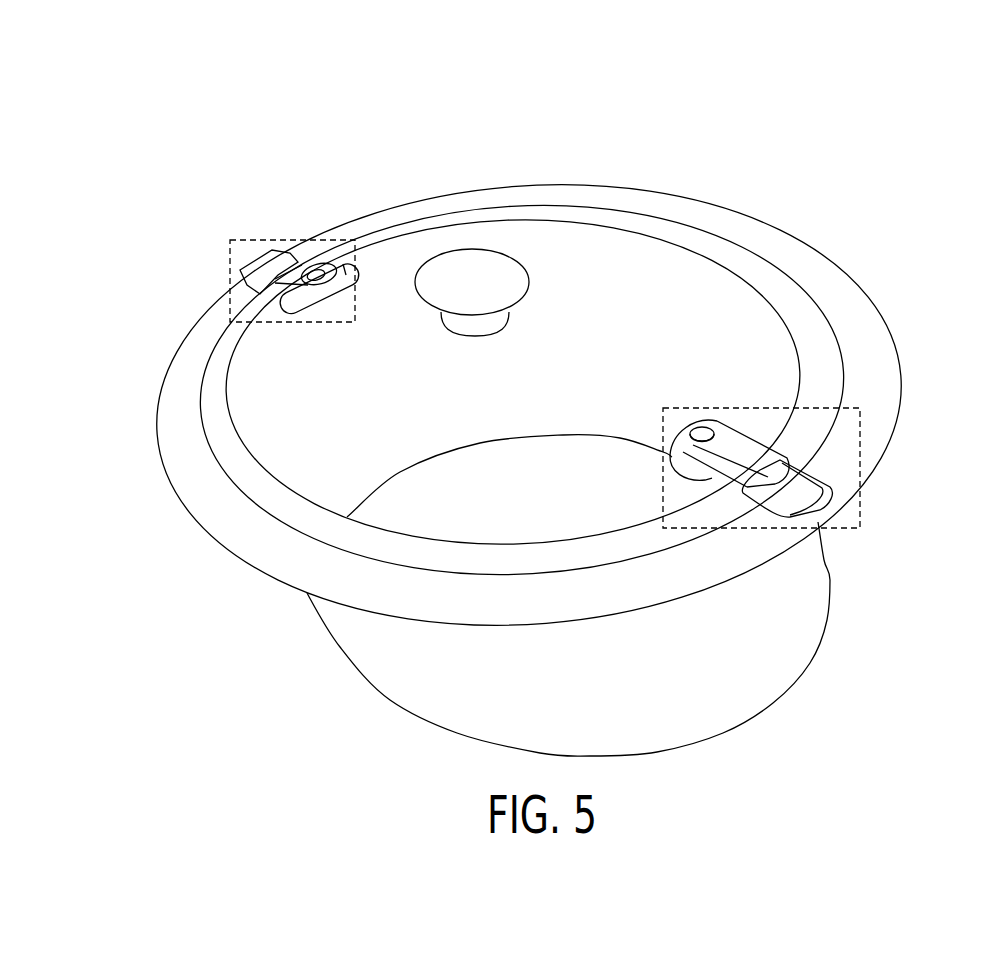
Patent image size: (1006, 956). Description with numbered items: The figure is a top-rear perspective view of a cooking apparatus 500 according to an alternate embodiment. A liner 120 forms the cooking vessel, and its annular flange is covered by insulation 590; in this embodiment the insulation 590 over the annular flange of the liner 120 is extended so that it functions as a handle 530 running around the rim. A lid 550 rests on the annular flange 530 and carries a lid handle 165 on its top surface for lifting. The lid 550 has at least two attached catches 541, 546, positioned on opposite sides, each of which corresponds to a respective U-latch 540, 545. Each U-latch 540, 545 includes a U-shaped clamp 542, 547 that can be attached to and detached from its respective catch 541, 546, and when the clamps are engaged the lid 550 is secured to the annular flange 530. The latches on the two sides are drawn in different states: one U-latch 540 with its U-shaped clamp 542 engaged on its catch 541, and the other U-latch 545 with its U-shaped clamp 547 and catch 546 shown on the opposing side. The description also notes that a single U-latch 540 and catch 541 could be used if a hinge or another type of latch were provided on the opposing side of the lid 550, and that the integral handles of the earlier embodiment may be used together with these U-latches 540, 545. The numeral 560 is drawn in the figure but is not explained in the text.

The cooking apparatus 500 is at (858, 110).
The liner 120 is at (827, 578).
The lid handle 165 is at (485, 252).
The handle 530 is at (240, 562).
The U-latch 540 is at (282, 238).
The catch 541 is at (352, 266).
The U-shaped clamp 542 is at (313, 264).
The U-latch 545 is at (862, 507).
The catch 546 is at (700, 482).
The U-shaped clamp 547 is at (787, 457).
The lid 550 is at (625, 300).
The lid edge 560 is at (260, 363).
The insulation 590 is at (175, 393).